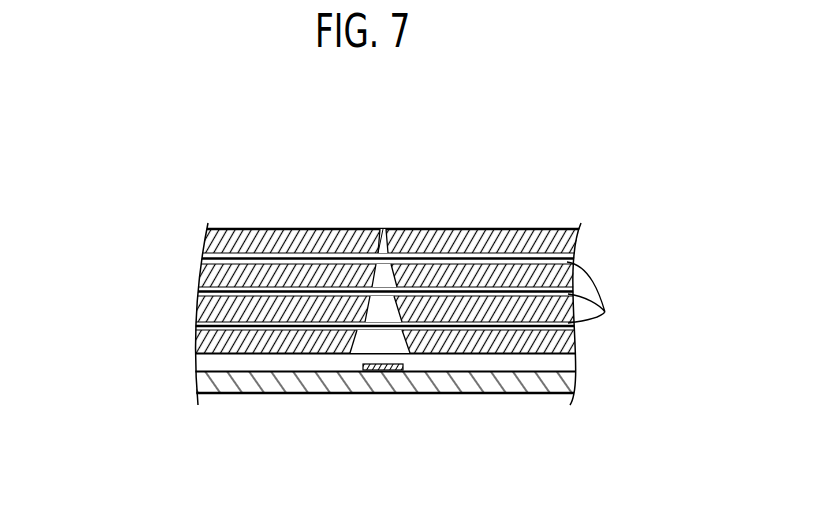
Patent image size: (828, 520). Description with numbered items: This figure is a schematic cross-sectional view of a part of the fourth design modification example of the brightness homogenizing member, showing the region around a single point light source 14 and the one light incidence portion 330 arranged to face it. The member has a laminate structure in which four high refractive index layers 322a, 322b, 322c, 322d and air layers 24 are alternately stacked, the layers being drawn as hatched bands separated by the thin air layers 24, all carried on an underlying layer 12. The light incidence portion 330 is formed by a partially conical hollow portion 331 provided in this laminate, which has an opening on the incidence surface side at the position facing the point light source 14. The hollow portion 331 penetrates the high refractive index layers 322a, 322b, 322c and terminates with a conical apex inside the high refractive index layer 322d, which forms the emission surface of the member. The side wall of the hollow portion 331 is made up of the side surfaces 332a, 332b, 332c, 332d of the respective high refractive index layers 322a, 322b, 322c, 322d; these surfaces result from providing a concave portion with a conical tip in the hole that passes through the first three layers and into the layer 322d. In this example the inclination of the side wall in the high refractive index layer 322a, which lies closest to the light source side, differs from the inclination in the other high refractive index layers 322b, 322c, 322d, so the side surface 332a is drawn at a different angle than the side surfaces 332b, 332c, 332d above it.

The substrate 12 is at (202, 382).
The point light source 14 is at (407, 369).
The air layers 24 is at (605, 312).
The high refractive index layer 322a is at (203, 341).
The high refractive index layer 322b is at (203, 309).
The high refractive index layer 322c is at (205, 278).
The high refractive index layer 322d is at (207, 245).
The light incidence portion 330 is at (384, 226).
The hollow portion 331 is at (406, 331).
The side surface 332a is at (358, 354).
The side surface 332b is at (393, 310).
The side surface 332c is at (389, 283).
The side surface 332d is at (386, 251).